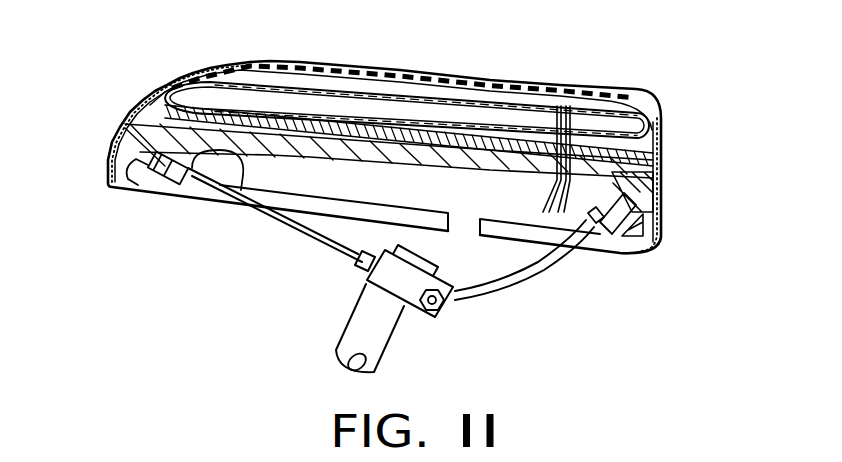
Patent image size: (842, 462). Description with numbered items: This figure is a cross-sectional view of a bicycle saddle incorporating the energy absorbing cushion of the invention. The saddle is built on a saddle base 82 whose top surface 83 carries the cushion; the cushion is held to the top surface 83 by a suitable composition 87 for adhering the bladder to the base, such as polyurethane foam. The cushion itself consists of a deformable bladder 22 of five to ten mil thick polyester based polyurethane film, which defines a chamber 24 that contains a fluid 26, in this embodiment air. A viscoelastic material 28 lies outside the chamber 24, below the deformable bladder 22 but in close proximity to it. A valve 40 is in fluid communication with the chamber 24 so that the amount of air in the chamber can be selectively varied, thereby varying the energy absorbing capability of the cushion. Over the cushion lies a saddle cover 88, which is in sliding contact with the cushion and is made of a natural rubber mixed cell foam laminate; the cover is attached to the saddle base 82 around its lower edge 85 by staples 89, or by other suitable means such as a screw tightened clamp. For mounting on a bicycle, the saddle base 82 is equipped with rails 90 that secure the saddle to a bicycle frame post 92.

The deformable bladder 22 is at (662, 127).
The chamber 24 is at (487, 90).
The fluid 26 is at (563, 118).
The viscoelastic material 28 is at (142, 103).
The valve 40 is at (548, 240).
The saddle base 82 is at (217, 202).
The top surface 83 is at (388, 147).
The lower edge 85 is at (453, 227).
The composition for adhering 87 is at (663, 173).
The saddle cover 88 is at (118, 136).
The staples 89 is at (618, 255).
The rails 90 is at (313, 248).
The bicycle frame post 92 is at (343, 323).